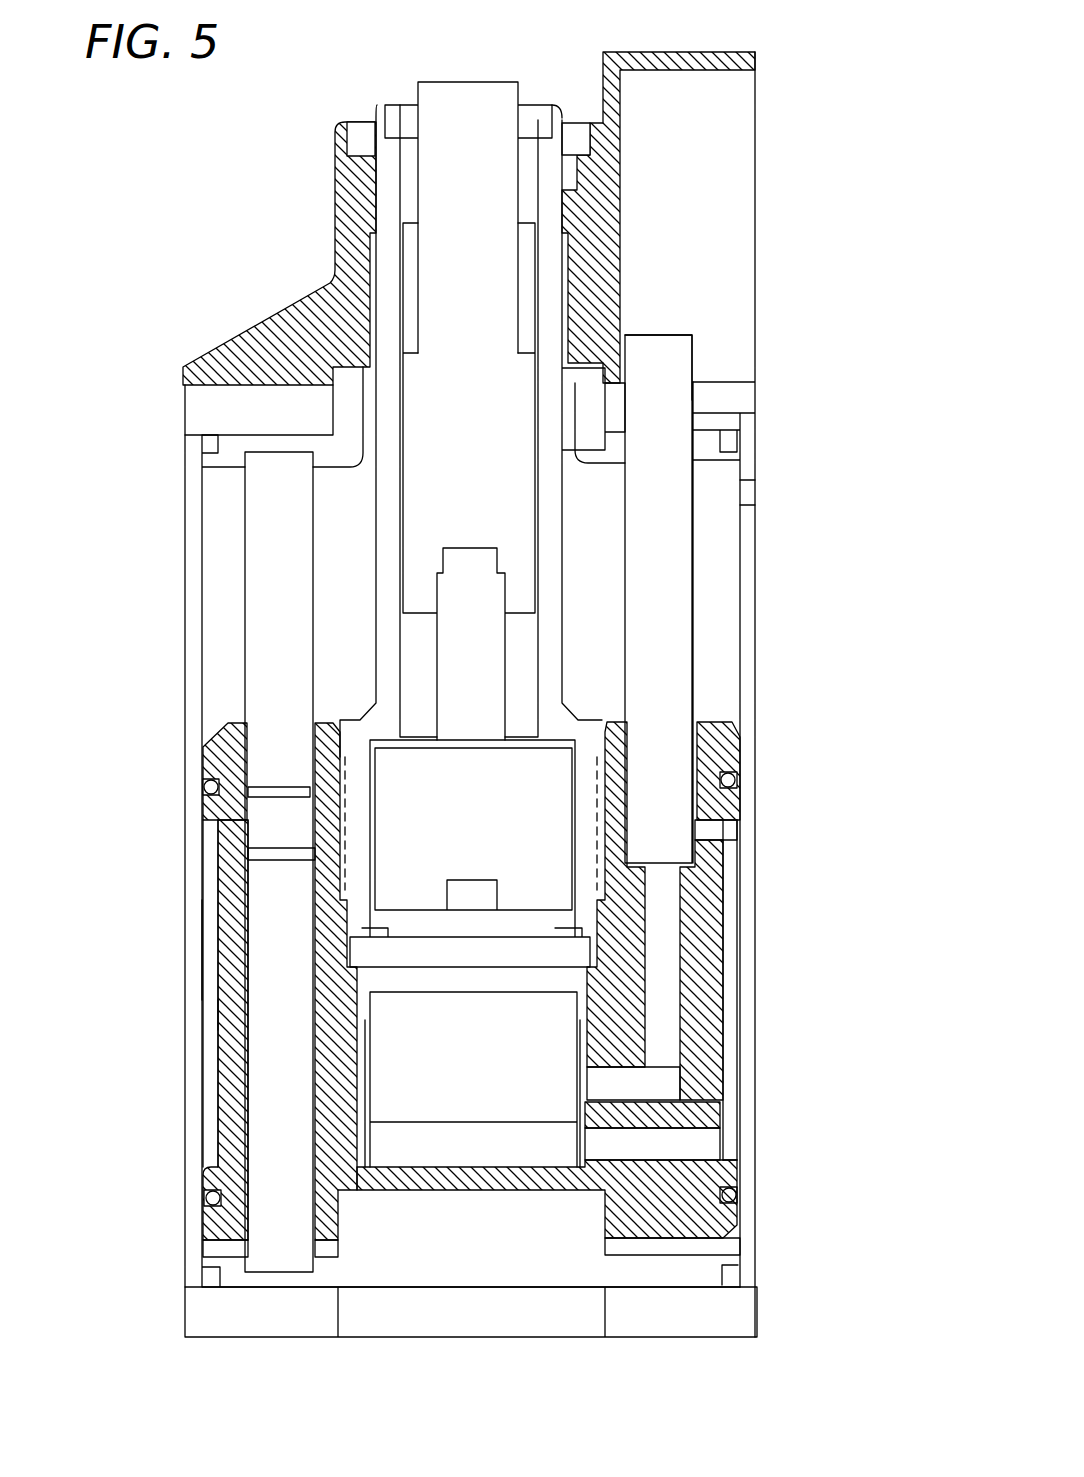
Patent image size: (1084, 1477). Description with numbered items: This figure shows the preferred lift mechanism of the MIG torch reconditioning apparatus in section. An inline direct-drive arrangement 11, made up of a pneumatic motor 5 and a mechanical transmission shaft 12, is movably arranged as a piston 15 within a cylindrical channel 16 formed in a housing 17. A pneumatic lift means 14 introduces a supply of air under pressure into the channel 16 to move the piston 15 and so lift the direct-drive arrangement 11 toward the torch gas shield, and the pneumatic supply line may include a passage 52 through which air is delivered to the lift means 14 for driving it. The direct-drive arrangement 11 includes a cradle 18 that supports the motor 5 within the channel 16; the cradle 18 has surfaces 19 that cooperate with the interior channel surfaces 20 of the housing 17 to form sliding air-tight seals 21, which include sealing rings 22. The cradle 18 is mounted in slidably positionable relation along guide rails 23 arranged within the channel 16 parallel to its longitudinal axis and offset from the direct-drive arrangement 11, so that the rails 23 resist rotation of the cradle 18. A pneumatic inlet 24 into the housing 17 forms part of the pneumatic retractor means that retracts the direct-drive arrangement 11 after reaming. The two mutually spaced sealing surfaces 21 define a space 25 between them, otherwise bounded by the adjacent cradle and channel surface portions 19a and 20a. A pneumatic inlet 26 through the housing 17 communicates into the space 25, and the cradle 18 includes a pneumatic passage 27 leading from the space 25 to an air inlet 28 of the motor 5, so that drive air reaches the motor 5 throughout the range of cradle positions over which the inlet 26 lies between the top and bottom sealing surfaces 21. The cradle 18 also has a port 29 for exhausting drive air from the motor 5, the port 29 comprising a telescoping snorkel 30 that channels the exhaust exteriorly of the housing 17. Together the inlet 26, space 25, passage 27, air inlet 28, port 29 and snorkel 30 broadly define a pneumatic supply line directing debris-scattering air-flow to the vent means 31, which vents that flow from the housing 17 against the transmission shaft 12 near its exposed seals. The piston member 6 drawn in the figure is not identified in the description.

The motor 5 is at (401, 1043).
The piston member 6 is at (411, 821).
The direct-drive arrangement 11 is at (455, 76).
The mechanical transmission shaft 12 is at (460, 415).
The pneumatic lift means 14 is at (334, 1047).
The piston 15 is at (203, 827).
The channel 16 is at (223, 618).
The housing 17 is at (187, 463).
The cradle 18 is at (227, 953).
The cradle surfaces 19 is at (215, 748).
The cradle surface portion 19a is at (213, 1010).
The interior channel surfaces 20 is at (727, 612).
The channel surface portion 20a is at (206, 975).
The sliding air-tight seals 21 is at (769, 768).
The sealing rings 22 is at (204, 787).
The guide rail 23 is at (268, 605).
The pneumatic inlet 24 is at (757, 487).
The space 25 is at (210, 870).
The pneumatic inlet 26 is at (736, 850).
The pneumatic passage 27 is at (707, 1148).
The air inlet 28 is at (577, 1140).
The port 29 is at (631, 1076).
The telescoping snorkel 30 is at (678, 347).
The vent means 31 is at (624, 80).
The passage 52 is at (752, 1242).